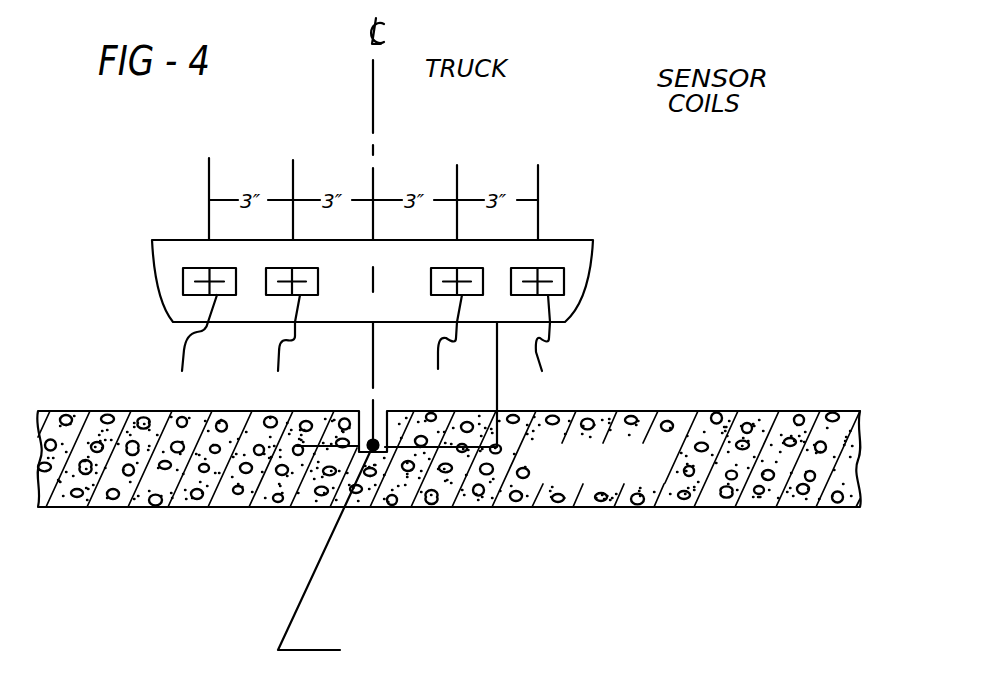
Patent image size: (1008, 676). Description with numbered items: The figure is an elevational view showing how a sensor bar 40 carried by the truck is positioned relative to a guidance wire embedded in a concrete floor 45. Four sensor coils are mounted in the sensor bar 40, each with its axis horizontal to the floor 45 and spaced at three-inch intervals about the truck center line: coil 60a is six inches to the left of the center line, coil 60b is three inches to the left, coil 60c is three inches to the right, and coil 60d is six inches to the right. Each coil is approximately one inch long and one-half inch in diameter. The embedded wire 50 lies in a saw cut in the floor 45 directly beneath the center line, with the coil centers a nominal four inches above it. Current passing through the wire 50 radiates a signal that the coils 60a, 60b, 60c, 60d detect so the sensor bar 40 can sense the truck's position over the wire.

The sensor bar 40 is at (163, 280).
The floor 45 is at (757, 508).
The embedded wire 50 is at (376, 449).
The sensor coil 60a is at (194, 335).
The sensor coil 60b is at (292, 335).
The sensor coil 60c is at (451, 334).
The sensor coil 60d is at (546, 338).